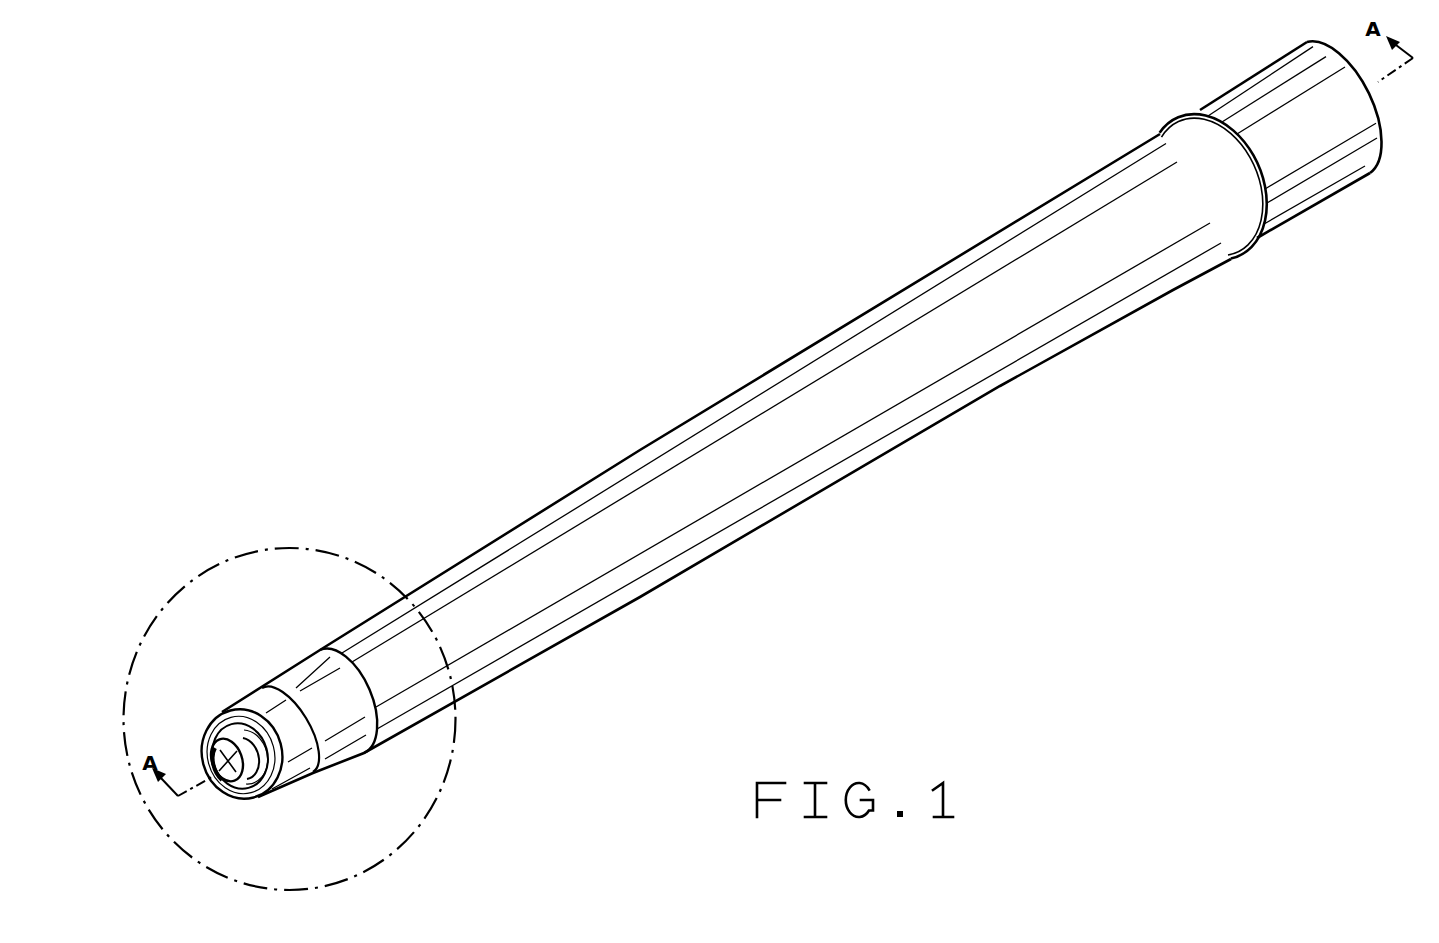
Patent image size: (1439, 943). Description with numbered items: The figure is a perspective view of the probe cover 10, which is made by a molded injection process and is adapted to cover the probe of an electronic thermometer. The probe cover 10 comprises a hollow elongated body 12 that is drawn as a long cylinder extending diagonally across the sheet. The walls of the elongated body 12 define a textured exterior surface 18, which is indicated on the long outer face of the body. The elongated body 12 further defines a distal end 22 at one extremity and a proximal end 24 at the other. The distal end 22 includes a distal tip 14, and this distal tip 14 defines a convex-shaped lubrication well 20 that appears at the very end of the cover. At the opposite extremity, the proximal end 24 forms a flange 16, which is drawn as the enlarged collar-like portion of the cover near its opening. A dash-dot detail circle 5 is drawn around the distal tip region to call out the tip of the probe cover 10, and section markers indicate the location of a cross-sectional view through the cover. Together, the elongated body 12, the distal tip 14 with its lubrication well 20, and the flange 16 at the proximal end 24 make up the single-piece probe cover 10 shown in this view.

The detail circle 5 is at (452, 763).
The probe cover 10 is at (678, 354).
The hollow elongated body 12 is at (727, 562).
The distal tip 14 is at (257, 803).
The flange 16 is at (1262, 68).
The textured exterior surface 18 is at (817, 341).
The lubrication well 20 is at (230, 782).
The distal end 22 is at (203, 742).
The proximal end 24 is at (1384, 154).